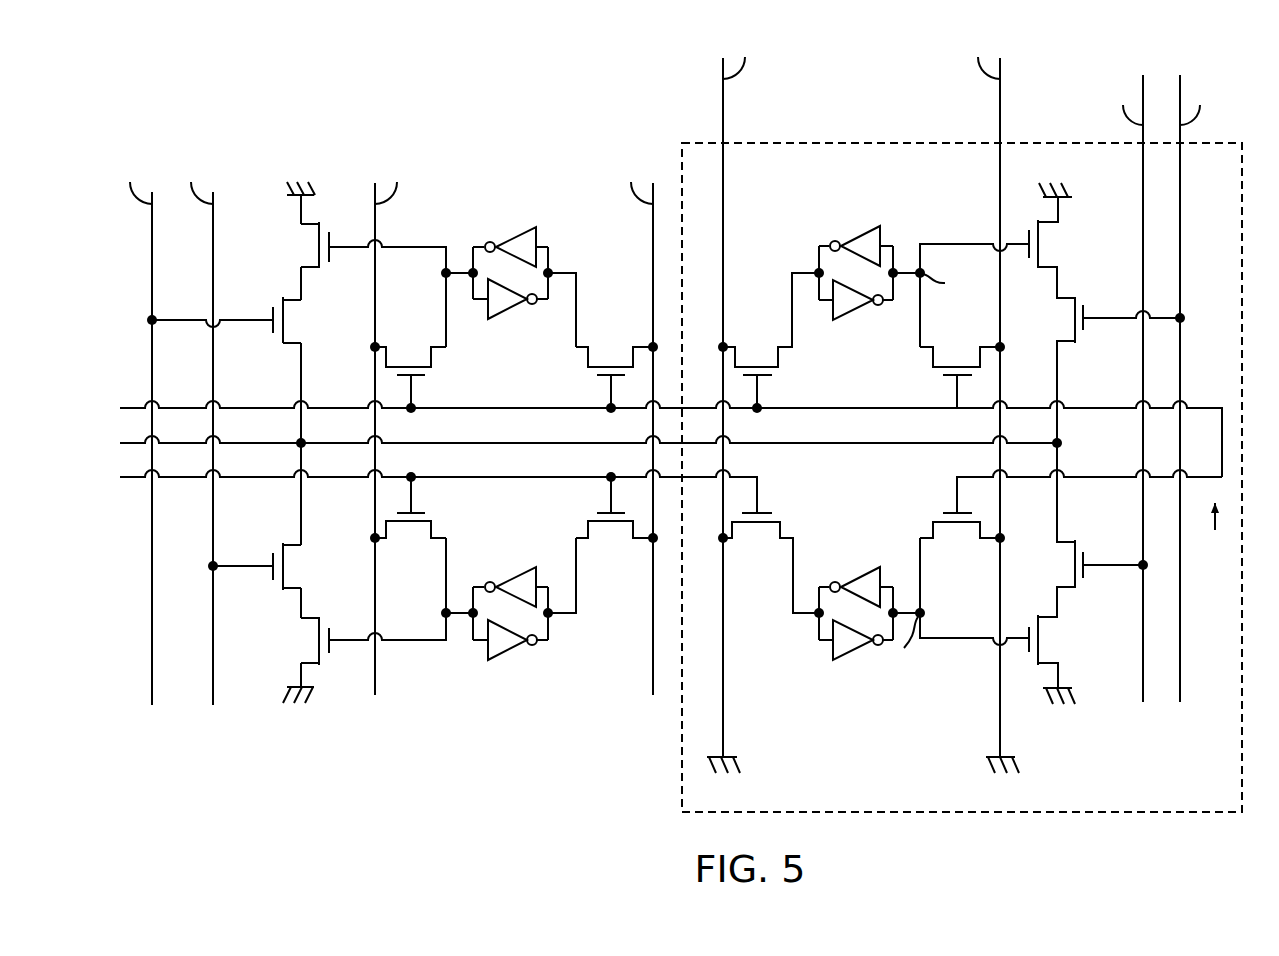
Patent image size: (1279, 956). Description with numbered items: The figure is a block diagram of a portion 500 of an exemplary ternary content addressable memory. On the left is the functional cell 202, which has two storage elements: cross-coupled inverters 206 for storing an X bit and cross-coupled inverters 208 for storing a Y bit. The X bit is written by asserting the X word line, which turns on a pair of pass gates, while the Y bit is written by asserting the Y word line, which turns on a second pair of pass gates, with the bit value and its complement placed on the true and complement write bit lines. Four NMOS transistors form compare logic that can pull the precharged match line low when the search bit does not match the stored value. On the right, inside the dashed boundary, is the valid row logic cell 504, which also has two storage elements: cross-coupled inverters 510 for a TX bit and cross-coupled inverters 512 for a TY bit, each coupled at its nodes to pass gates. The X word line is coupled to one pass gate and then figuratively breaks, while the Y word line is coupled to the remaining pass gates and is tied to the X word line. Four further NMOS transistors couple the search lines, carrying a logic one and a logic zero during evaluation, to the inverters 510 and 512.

The functional cell 202 is at (383, 377).
The cross-coupled inverters 206 is at (566, 637).
The cross-coupled inverters 208 is at (559, 242).
The portion 500 is at (662, 430).
The valid row logic cell 504 is at (968, 421).
The cross-coupled inverters 510 is at (811, 651).
The cross-coupled inverters 512 is at (797, 246).